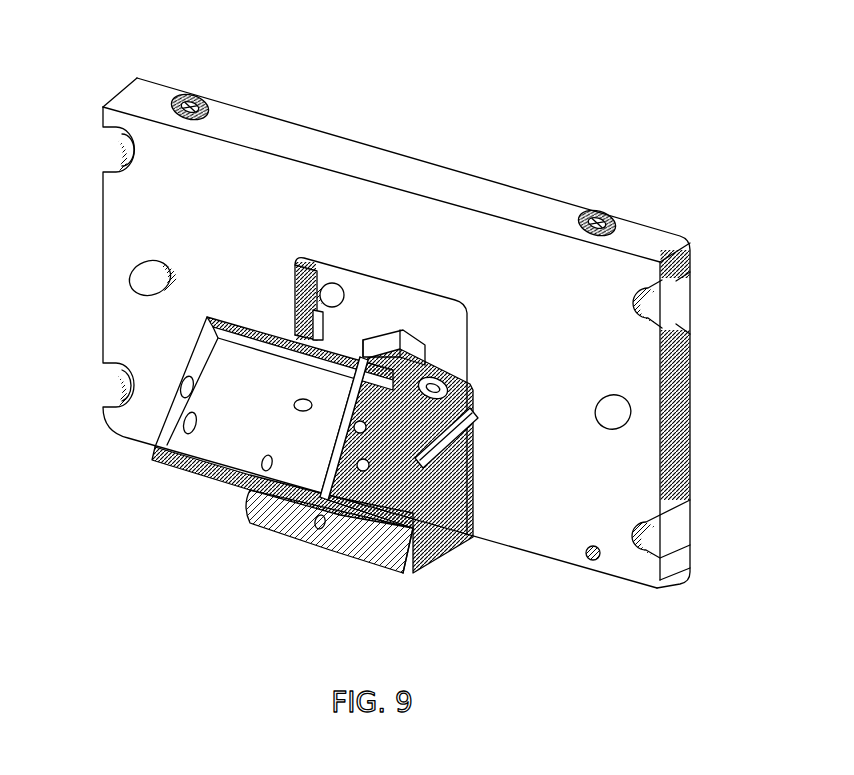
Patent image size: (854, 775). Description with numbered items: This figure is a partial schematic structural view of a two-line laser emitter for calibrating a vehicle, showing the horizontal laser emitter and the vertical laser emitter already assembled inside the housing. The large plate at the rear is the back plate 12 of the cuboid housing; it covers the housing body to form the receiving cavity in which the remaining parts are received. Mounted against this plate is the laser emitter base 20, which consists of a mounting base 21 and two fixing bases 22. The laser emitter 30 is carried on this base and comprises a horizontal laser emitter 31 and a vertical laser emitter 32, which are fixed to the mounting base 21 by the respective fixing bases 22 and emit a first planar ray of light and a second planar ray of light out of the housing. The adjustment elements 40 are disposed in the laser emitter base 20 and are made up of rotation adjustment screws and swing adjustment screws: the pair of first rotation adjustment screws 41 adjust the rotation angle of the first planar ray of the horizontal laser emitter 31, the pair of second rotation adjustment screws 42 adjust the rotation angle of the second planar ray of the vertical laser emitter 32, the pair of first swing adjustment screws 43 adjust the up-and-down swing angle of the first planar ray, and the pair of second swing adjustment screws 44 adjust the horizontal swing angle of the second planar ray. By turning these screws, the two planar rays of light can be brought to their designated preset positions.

The back plate 12 is at (377, 178).
The laser emitter base 20 is at (220, 447).
The mounting base 21 is at (240, 443).
The fixing bases 22 is at (267, 343).
The laser emitter 30 is at (497, 338).
The horizontal laser emitter 31 is at (367, 340).
The vertical laser emitter 32 is at (317, 298).
The adjustment elements 40 is at (315, 502).
The first rotation adjustment screws 41 is at (443, 510).
The second rotation adjustment screws 42 is at (360, 427).
The first swing adjustment screws 43 is at (323, 517).
The second swing adjustment screws 44 is at (374, 537).